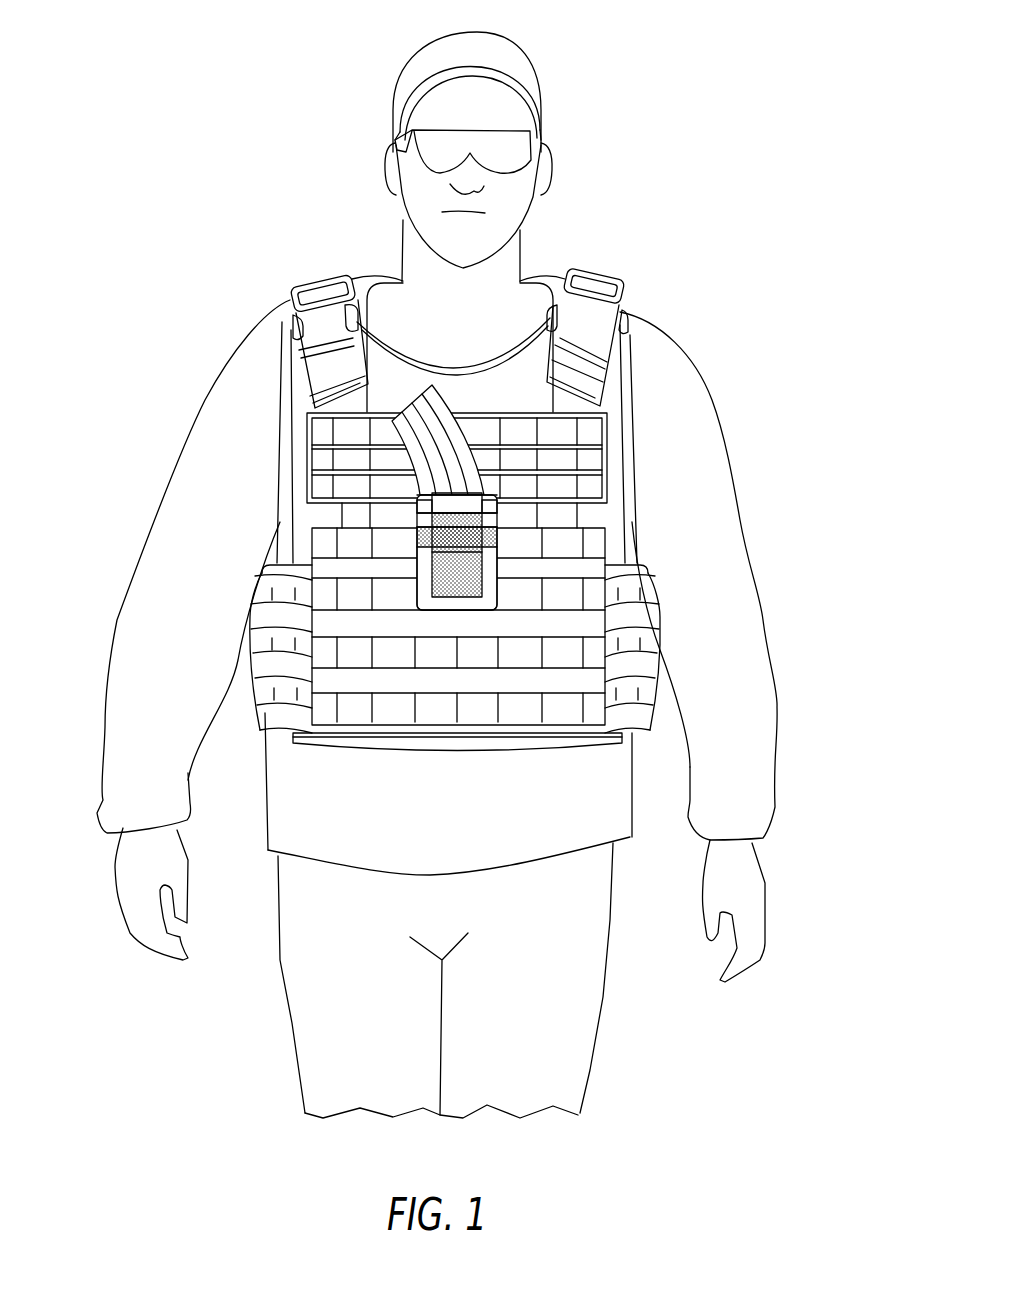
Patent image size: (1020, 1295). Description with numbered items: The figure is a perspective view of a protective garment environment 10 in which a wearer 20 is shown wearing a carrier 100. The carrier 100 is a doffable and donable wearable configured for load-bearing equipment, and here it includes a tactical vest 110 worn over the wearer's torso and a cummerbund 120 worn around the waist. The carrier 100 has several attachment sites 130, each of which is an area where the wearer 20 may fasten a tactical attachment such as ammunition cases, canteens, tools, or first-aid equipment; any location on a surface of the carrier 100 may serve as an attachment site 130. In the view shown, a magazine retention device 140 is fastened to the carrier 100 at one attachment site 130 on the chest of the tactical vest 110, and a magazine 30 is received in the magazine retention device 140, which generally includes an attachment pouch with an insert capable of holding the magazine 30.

The protective garment environment 10 is at (692, 88).
The wearer 20 is at (413, 65).
The magazine 30 is at (470, 413).
The carrier 100 is at (315, 280).
The tactical vest 110 is at (243, 407).
The cummerbund 120 is at (250, 703).
The attachment site 130 is at (570, 488).
The magazine retention device 140 is at (417, 572).